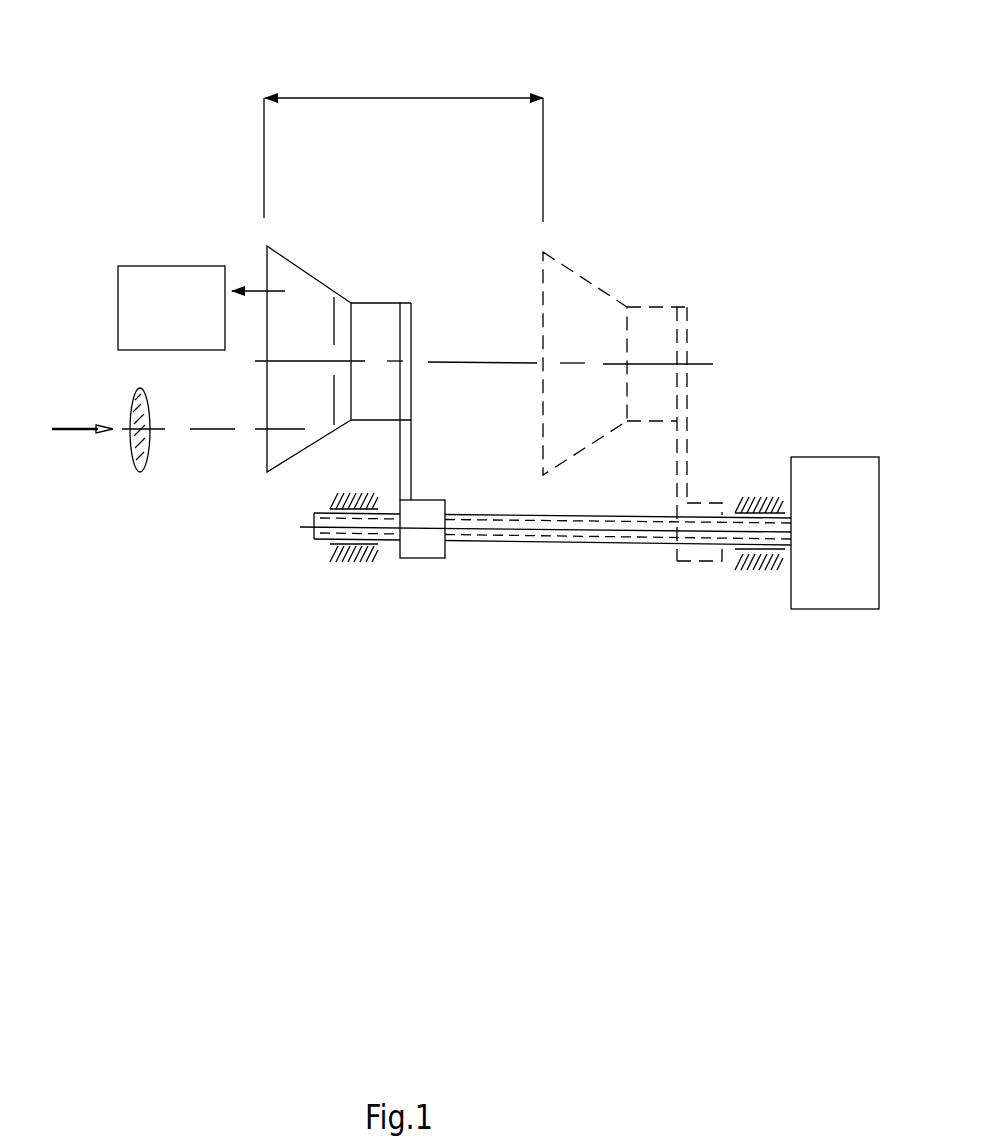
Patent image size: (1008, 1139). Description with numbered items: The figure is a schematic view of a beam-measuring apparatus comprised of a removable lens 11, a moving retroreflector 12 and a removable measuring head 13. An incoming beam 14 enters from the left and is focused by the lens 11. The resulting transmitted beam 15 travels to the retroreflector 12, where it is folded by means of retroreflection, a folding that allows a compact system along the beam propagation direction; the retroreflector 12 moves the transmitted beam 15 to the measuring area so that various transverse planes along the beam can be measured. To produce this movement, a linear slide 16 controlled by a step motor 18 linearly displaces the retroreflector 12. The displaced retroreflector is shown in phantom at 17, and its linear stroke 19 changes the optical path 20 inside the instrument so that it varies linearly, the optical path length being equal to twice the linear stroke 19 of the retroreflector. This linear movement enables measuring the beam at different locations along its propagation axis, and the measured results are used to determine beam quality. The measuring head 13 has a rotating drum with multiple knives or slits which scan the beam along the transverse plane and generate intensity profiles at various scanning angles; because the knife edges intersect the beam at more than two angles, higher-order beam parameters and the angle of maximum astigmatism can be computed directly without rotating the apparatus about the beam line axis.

The removable lens 11 is at (190, 545).
The moving retroreflector 12 is at (343, 333).
The removable measuring head 13 is at (180, 258).
The incoming beam 14 is at (121, 563).
The transmitted beam 15 is at (333, 402).
The linear slide 16 is at (545, 599).
The displaced retroreflector 17 is at (632, 363).
The step motor 18 is at (821, 387).
The linear stroke 19 is at (403, 114).
The optical path 20 is at (262, 565).